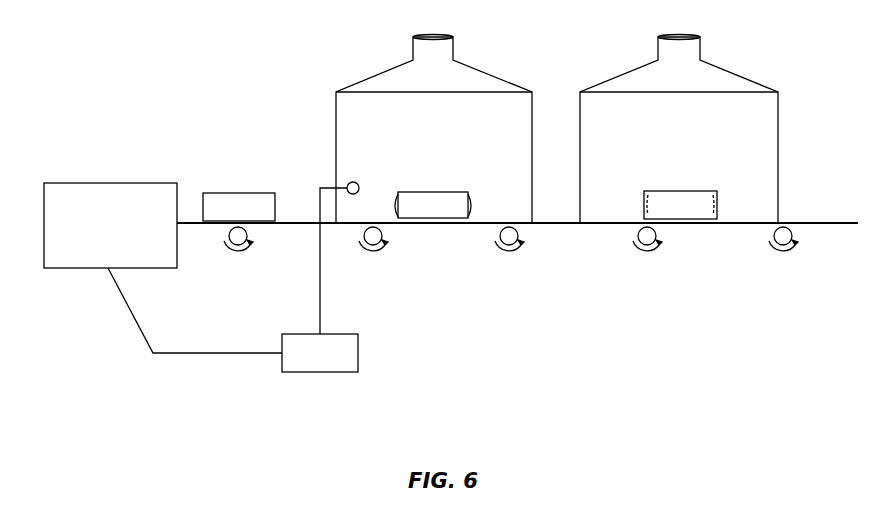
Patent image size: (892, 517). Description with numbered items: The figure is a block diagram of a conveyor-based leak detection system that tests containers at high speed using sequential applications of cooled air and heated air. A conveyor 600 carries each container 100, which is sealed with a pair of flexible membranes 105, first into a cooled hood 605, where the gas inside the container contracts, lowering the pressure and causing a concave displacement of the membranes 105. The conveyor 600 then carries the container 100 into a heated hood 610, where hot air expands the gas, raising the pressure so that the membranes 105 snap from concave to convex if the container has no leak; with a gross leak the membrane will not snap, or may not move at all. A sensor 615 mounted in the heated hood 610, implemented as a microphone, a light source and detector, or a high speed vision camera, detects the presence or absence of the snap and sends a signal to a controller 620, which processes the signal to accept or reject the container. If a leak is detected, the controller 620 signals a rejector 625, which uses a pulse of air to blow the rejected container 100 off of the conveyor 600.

The container 100 is at (460, 172).
The flexible membranes 105 is at (435, 180).
The conveyor 600 is at (517, 262).
The cooled hood 605 is at (700, 128).
The heated hood 610 is at (454, 128).
The sensor 615 is at (312, 237).
The controller 620 is at (360, 340).
The rejector 625 is at (151, 247).